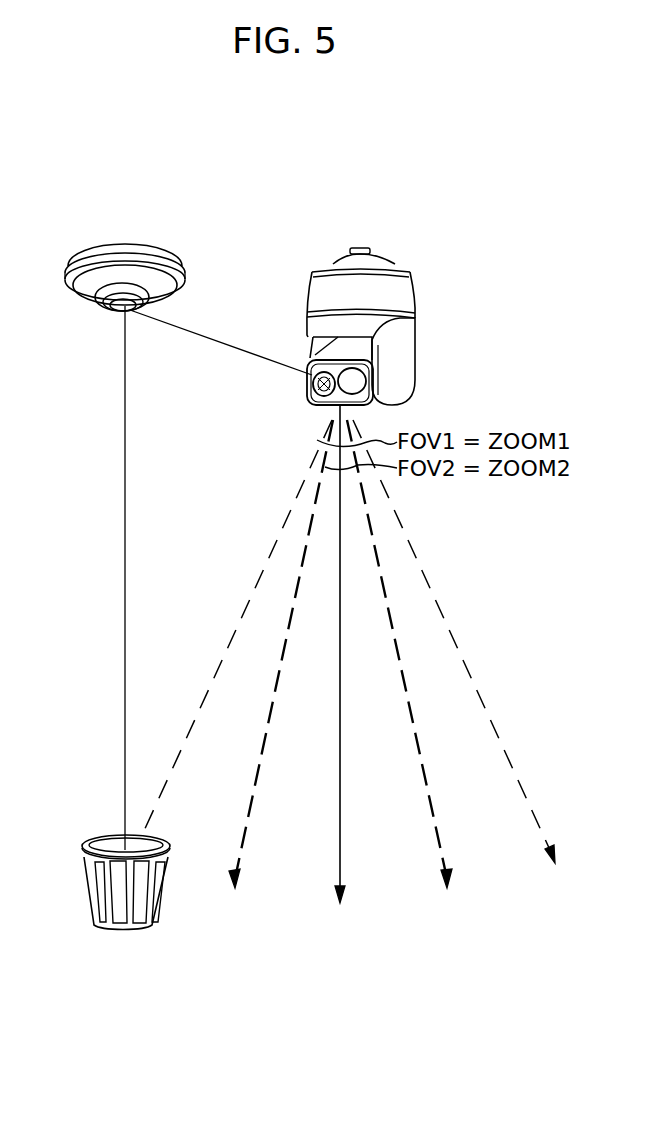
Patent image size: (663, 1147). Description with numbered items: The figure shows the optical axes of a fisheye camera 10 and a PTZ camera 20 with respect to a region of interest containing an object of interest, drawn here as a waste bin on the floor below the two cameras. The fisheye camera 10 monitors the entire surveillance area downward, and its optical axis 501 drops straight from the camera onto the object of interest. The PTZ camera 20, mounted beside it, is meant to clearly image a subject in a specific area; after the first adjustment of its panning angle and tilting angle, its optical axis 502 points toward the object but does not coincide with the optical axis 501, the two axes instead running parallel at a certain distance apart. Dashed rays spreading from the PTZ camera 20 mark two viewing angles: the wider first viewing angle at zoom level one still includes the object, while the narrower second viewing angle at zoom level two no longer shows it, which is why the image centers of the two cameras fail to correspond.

The fisheye camera 10 is at (176, 295).
The PTZ camera 20 is at (415, 385).
The optical axis of the fisheye camera 501 is at (125, 657).
The optical axis of the PTZ camera 502 is at (340, 848).